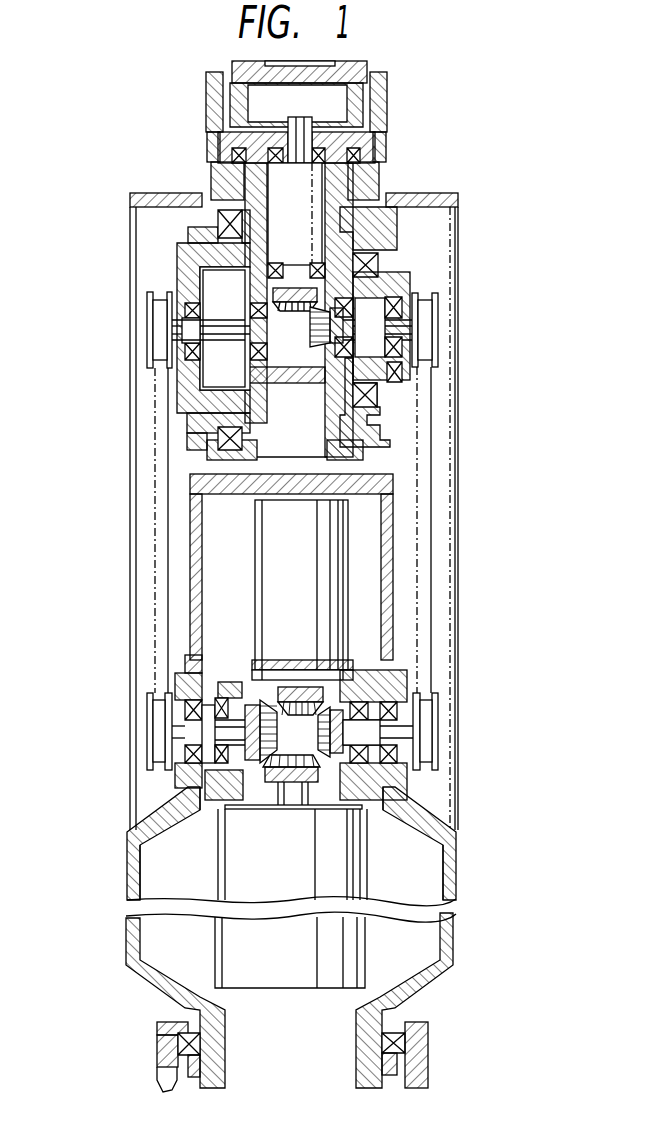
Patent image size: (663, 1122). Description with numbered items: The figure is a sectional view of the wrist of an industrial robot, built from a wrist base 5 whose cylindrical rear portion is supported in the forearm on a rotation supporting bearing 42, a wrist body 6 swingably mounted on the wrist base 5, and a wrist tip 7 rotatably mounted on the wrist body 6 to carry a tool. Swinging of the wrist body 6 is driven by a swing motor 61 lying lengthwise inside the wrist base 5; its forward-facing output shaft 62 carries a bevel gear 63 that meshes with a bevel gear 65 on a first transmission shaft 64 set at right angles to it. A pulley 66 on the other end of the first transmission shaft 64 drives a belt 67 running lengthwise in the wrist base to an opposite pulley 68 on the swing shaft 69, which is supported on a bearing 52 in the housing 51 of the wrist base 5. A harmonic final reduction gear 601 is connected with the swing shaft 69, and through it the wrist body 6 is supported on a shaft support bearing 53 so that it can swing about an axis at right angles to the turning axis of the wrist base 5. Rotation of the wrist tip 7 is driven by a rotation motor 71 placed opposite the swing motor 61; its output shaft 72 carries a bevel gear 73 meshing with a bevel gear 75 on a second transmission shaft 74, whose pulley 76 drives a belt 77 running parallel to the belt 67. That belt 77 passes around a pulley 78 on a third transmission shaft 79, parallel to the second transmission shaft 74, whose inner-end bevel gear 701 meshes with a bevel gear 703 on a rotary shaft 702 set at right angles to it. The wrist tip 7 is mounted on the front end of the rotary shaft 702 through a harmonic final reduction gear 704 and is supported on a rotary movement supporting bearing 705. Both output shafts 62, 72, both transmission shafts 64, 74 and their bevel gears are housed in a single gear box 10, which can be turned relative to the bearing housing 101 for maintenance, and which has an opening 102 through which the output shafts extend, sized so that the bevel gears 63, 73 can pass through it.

The wrist base 5 is at (133, 870).
The wrist body 6 is at (252, 193).
The wrist tip 7 is at (210, 72).
The gear box 10 is at (215, 790).
The rotation supporting bearing 42 is at (160, 1030).
The housing 51 is at (222, 385).
The bearing 52 is at (190, 357).
The shaft support bearing 53 is at (215, 214).
The swing motor 61 is at (335, 870).
The output shaft 62 is at (318, 805).
The bevel gear 63 is at (285, 775).
The first transmission shaft 64 is at (230, 687).
The bevel gear 65 is at (236, 762).
The pulley 66 is at (150, 720).
The belt 67 is at (152, 457).
The pulley 68 is at (150, 326).
The swing shaft 69 is at (195, 318).
The rotation motor 71 is at (282, 545).
The output shaft 72 is at (315, 690).
The bevel gear 73 is at (290, 700).
The second transmission shaft 74 is at (358, 695).
The bevel gear 75 is at (320, 737).
The pulley 76 is at (435, 716).
The belt 77 is at (430, 483).
The pulley 78 is at (432, 320).
The third transmission shaft 79 is at (370, 325).
The bearing housing 101 is at (190, 697).
The opening 102 is at (268, 670).
The harmonic final reduction gear 601 is at (208, 258).
The bevel gear 701 is at (320, 345).
The rotary shaft 702 is at (318, 200).
The bevel gear 703 is at (292, 312).
The harmonic final reduction gear 704 is at (237, 95).
The rotary movement supporting bearing 705 is at (222, 178).